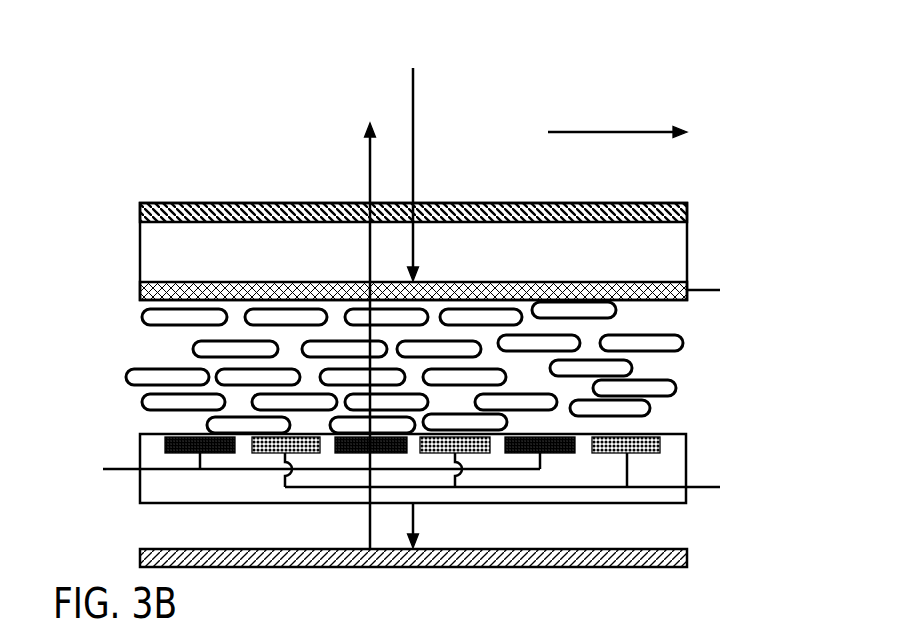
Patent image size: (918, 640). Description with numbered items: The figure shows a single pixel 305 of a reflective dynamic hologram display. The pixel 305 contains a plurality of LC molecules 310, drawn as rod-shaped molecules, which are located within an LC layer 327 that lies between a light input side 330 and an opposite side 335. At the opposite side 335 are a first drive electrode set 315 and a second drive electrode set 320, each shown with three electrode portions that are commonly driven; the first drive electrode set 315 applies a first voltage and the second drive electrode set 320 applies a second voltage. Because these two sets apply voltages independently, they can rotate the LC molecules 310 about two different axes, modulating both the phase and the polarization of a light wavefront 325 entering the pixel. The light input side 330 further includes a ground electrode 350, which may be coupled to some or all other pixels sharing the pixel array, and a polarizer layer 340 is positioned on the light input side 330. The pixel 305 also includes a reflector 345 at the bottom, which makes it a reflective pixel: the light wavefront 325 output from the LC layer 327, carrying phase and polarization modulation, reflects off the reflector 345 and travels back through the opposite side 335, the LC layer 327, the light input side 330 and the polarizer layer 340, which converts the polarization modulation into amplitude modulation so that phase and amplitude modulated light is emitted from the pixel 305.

The pixel 305 is at (716, 33).
The LC molecules 310 is at (676, 388).
The first drive electrode set 315 is at (185, 490).
The second drive electrode set 320 is at (667, 423).
The light wavefront 325 is at (413, 110).
The LC layer 327 is at (140, 345).
The light input side 330 is at (687, 256).
The opposite side 335 is at (687, 455).
The polarizer layer 340 is at (687, 213).
The reflector 345 is at (687, 558).
The ground electrode 350 is at (140, 290).